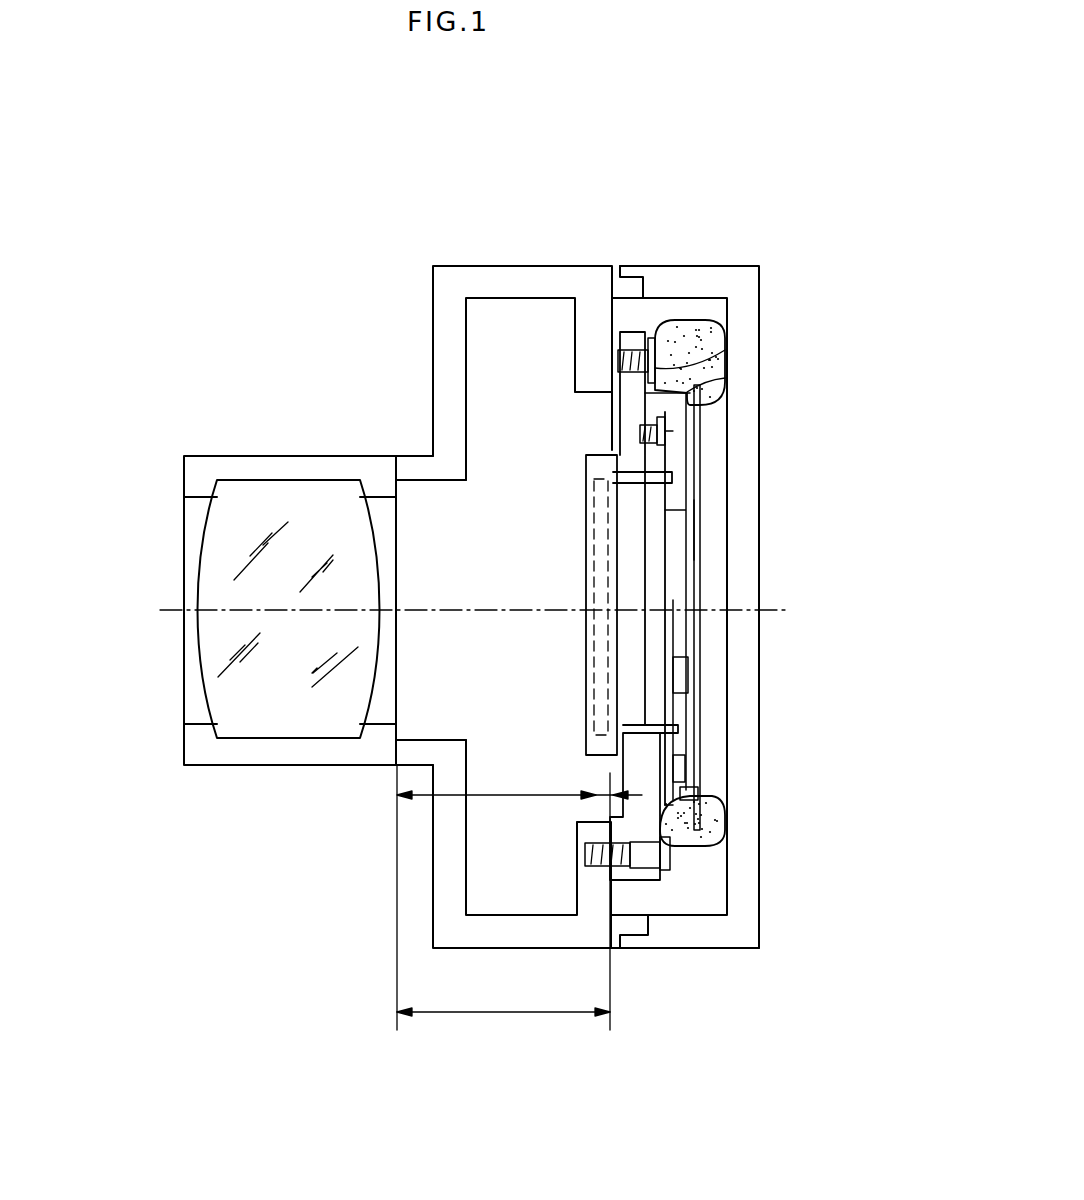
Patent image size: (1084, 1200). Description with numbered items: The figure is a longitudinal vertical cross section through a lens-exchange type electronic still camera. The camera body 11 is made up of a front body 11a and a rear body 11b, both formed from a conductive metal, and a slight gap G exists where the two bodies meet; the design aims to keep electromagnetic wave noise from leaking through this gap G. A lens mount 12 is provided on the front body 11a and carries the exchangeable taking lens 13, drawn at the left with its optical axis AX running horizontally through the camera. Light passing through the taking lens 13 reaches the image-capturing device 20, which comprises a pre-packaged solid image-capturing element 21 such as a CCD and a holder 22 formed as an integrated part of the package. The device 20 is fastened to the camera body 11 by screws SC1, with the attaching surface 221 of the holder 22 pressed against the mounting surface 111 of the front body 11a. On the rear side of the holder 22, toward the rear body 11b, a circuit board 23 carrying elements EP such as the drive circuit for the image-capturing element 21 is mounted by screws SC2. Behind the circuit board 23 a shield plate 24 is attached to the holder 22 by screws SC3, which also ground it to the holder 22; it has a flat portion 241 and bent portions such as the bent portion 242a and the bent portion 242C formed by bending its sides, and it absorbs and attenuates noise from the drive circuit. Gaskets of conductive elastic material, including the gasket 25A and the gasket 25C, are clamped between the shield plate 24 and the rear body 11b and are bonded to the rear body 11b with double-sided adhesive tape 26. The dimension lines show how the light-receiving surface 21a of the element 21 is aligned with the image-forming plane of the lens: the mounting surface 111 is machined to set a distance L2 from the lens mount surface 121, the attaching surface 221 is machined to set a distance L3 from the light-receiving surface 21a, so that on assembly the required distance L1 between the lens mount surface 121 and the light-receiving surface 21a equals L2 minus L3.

The camera body 11 is at (596, 536).
The front body 11a is at (578, 365).
The rear body 11b is at (727, 265).
The mounting surface 111 is at (643, 290).
The lens mount 12 is at (410, 457).
The lens mount surface 121 is at (395, 748).
The taking lens 13 is at (244, 457).
The optical axis AX is at (184, 622).
The image-capturing device 20 is at (552, 605).
The image-capturing element 21 is at (592, 466).
The light-receiving surface 21a is at (592, 550).
The holder 22 is at (622, 412).
The attaching surface 221 is at (572, 308).
The gap G is at (614, 298).
The circuit board 23 is at (690, 440).
The shield plate 24 is at (702, 450).
The flat portion 241 is at (705, 505).
The bent portion 242a is at (705, 386).
The bent portion 242C is at (700, 776).
The gasket 25A is at (700, 322).
The gasket 25C is at (705, 845).
The double-sided adhesive tape 26 is at (777, 565).
The elements EP is at (693, 790).
The screws SC1 is at (660, 862).
The screws SC2 is at (673, 431).
The screws SC3 is at (655, 352).
The specific distance L1 is at (519, 894).
The specific distance L2 is at (503, 996).
The specific distance L3 is at (603, 804).